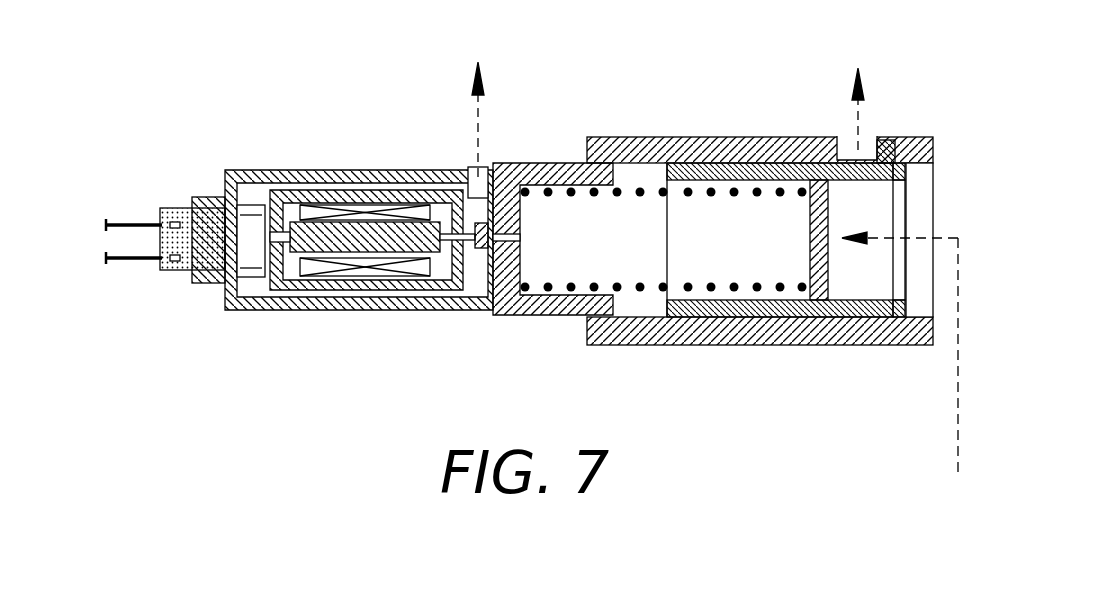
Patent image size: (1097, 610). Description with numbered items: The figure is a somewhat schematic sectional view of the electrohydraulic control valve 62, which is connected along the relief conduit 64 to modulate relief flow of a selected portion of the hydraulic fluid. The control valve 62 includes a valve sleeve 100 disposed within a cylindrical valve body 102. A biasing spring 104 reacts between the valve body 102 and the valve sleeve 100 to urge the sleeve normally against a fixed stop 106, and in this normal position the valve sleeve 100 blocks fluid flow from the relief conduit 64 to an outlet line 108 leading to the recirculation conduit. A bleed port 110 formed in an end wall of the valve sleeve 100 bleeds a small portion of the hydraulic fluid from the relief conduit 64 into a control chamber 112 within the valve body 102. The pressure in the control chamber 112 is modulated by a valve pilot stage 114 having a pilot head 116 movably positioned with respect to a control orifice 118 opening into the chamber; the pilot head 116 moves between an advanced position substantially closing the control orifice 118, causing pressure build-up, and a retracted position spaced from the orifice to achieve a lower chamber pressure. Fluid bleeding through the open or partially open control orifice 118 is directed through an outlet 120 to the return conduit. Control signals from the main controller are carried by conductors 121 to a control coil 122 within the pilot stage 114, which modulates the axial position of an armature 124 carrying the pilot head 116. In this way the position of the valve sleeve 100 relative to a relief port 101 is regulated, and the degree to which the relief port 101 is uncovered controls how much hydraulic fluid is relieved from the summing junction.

The electrohydraulic control valve 62 is at (330, 365).
The relief conduit 64 is at (958, 440).
The valve sleeve 100 is at (735, 318).
The relief port 101 is at (876, 138).
The cylindrical valve body 102 is at (632, 346).
The biasing spring 104 is at (620, 288).
The fixed stop 106 is at (899, 140).
The outlet line 108 is at (856, 100).
The bleed port 110 is at (825, 238).
The control chamber 112 is at (610, 215).
The valve pilot stage 114 is at (224, 309).
The pilot head 116 is at (481, 270).
The control orifice 118 is at (497, 238).
The outlet 120 is at (476, 105).
The conductors 121 is at (140, 222).
The control coil 122 is at (328, 196).
The armature 124 is at (305, 255).